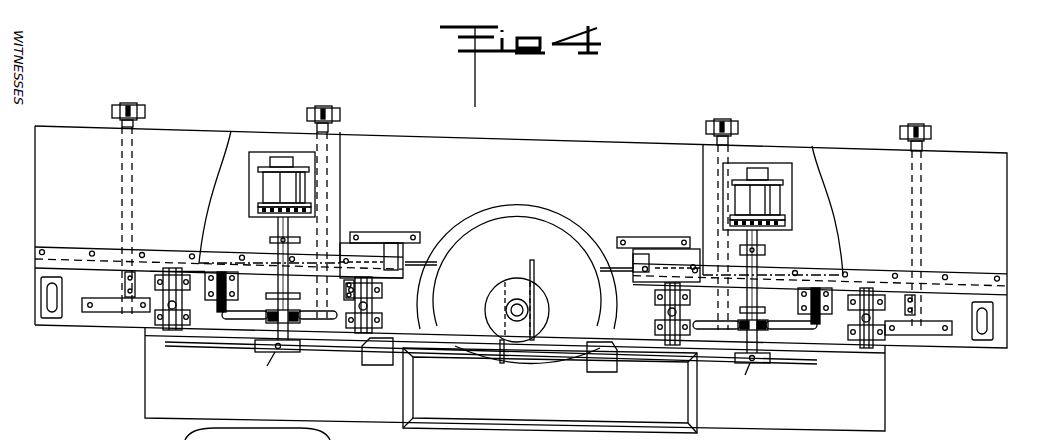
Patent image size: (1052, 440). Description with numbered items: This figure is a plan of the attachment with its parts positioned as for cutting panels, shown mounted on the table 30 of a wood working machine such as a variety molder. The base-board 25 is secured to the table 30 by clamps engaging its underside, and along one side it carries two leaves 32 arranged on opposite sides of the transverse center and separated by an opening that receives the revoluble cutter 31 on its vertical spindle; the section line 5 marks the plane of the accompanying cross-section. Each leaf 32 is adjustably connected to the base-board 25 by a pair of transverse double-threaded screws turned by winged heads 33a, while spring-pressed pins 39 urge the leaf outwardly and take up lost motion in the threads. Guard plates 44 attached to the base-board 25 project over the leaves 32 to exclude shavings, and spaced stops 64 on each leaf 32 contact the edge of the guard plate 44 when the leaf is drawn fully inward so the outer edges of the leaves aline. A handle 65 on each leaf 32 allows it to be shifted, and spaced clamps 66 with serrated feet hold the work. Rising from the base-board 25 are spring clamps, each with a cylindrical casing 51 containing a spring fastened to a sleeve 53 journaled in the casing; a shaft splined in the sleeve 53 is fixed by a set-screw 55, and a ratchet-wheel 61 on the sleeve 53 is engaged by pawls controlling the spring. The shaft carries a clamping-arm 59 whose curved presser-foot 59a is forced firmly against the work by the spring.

The section line 5 is at (517, 268).
The base-board 25 is at (555, 147).
The table 30 is at (158, 390).
The revoluble cutter 31 is at (535, 302).
The leaf 32 is at (422, 302).
The winged head 33a is at (146, 111).
The pin 39 is at (215, 259).
The guard plate 44 is at (360, 260).
The cylindrical casing 51 is at (278, 185).
The sleeve 53 is at (284, 233).
The set-screw 55 is at (41, 291).
The clamping-arm 59 is at (324, 350).
The curved presser-foot 59a is at (381, 355).
The ratchet-wheel 61 is at (306, 215).
The stop 64 is at (132, 275).
The handle 65 is at (993, 314).
The clamp 66 is at (162, 291).